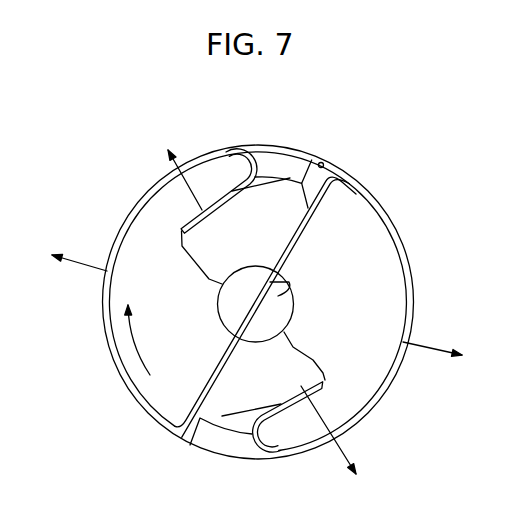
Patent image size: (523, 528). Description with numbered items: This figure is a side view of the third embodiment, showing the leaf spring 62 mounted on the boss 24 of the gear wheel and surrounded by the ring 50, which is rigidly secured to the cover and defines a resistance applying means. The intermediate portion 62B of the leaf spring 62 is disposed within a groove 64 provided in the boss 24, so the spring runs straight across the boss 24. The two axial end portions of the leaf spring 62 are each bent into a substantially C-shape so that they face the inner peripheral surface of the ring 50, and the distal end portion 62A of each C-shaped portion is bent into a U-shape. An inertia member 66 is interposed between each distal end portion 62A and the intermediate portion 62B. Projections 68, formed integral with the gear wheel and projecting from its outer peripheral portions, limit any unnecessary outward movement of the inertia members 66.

The ring 50 is at (267, 302).
The leaf spring 62 is at (377, 199).
The distal end portion 62A is at (232, 190).
The intermediate portion 62B is at (219, 366).
The projections 68 is at (282, 156).
The inertia member 66 is at (214, 281).
The boss 24 is at (291, 294).
The groove 64 is at (285, 283).